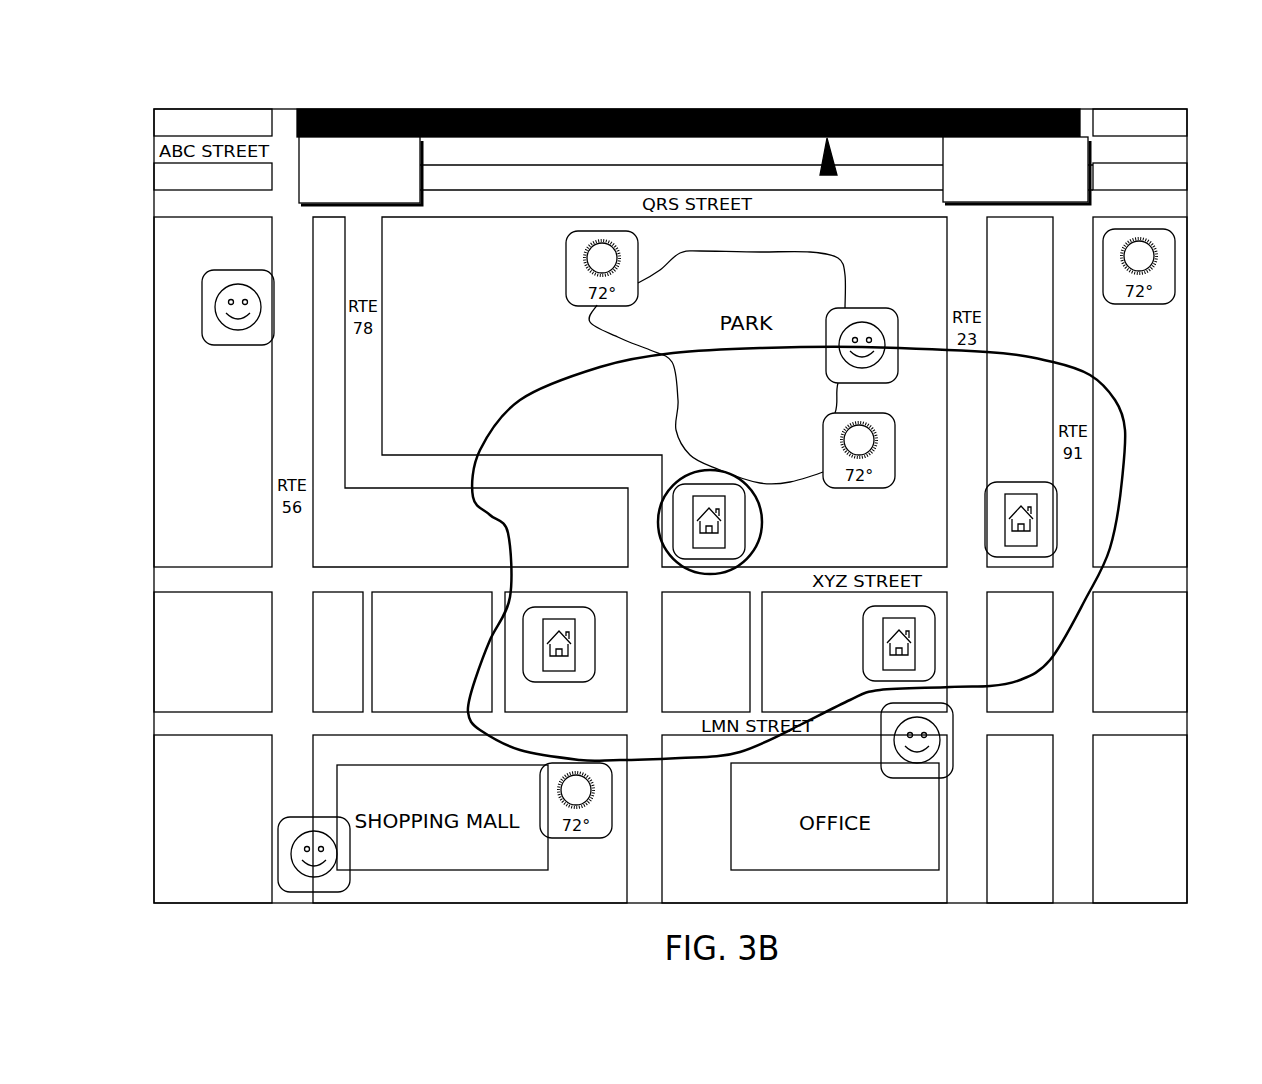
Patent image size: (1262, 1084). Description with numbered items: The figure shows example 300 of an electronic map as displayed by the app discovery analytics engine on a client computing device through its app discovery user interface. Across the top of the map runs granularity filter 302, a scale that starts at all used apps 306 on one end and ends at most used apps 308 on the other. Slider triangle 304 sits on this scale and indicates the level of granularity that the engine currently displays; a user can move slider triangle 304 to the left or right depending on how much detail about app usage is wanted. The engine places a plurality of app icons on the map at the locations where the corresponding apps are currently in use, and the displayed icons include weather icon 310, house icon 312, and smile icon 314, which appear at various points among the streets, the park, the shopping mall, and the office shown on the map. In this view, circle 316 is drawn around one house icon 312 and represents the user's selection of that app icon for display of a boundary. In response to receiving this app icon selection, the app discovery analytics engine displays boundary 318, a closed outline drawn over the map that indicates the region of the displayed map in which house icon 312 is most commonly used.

The example 300 is at (1090, 85).
The granularity filter 302 is at (607, 109).
The slider triangle 304 is at (834, 148).
The all used apps 306 is at (422, 178).
The most used apps 308 is at (1090, 147).
The weather icon 310 is at (1176, 250).
The house icon 312 is at (595, 645).
The smile icon 314 is at (955, 752).
The circle 316 is at (764, 520).
The boundary 318 is at (1111, 548).